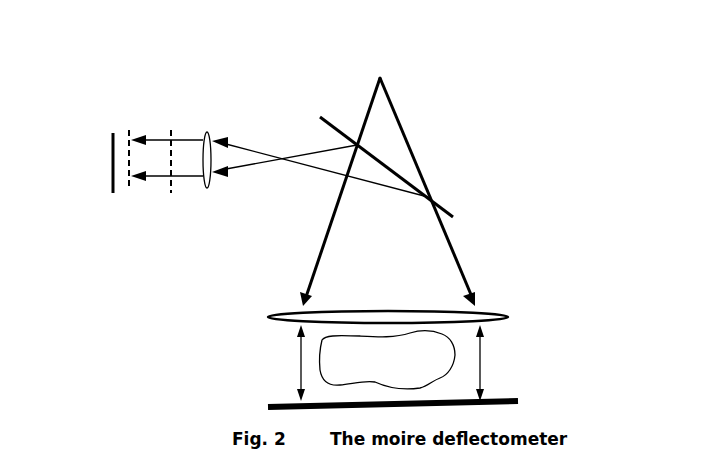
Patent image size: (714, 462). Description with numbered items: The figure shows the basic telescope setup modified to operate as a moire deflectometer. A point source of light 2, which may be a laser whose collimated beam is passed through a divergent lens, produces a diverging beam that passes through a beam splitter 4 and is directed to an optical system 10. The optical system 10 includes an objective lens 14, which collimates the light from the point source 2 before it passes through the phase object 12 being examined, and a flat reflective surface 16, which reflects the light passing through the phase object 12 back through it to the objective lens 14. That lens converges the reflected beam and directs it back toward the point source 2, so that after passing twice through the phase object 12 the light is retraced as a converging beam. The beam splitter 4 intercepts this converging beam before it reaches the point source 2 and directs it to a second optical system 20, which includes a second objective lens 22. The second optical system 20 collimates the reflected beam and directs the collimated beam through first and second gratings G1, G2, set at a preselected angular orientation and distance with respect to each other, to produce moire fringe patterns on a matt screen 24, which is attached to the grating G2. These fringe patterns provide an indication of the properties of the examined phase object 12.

The point source of light 2 is at (382, 76).
The beam splitter 4 is at (440, 207).
The optical system 10 is at (198, 355).
The phase object 12 is at (455, 348).
The objective lens 14 is at (462, 290).
The flat reflective surface 16 is at (270, 396).
The second optical system 20 is at (142, 192).
The second objective lens 22 is at (210, 186).
The matt screen 24 is at (112, 158).
The first grating G1 is at (165, 153).
The second grating G2 is at (126, 150).